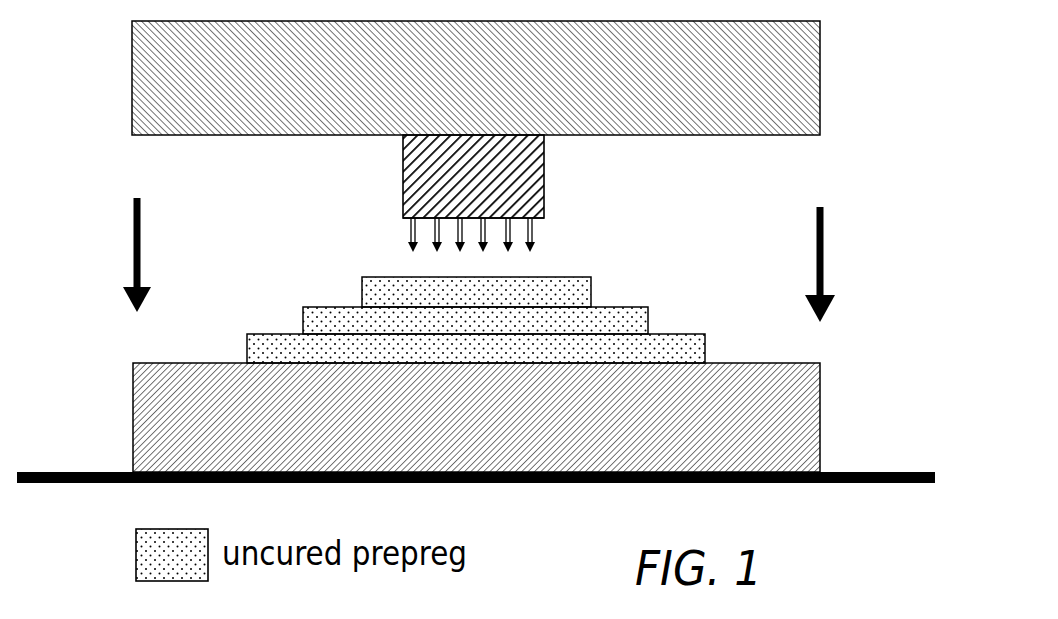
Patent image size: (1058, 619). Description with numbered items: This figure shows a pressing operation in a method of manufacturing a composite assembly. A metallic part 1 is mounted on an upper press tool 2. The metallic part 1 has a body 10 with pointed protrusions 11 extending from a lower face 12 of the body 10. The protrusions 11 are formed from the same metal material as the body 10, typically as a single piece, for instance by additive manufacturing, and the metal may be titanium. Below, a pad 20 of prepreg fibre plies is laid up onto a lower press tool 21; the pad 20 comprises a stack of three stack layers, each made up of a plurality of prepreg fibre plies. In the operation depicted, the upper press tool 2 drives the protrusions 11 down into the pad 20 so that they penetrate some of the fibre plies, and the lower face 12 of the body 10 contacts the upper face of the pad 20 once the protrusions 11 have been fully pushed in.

The metallic part 1 is at (454, 205).
The upper press tool 2 is at (172, 81).
The body 10 is at (535, 178).
The pointed protrusions 11 is at (556, 237).
The lower face 12 is at (451, 218).
The pad 20 is at (270, 299).
The lower press tool 21 is at (177, 399).